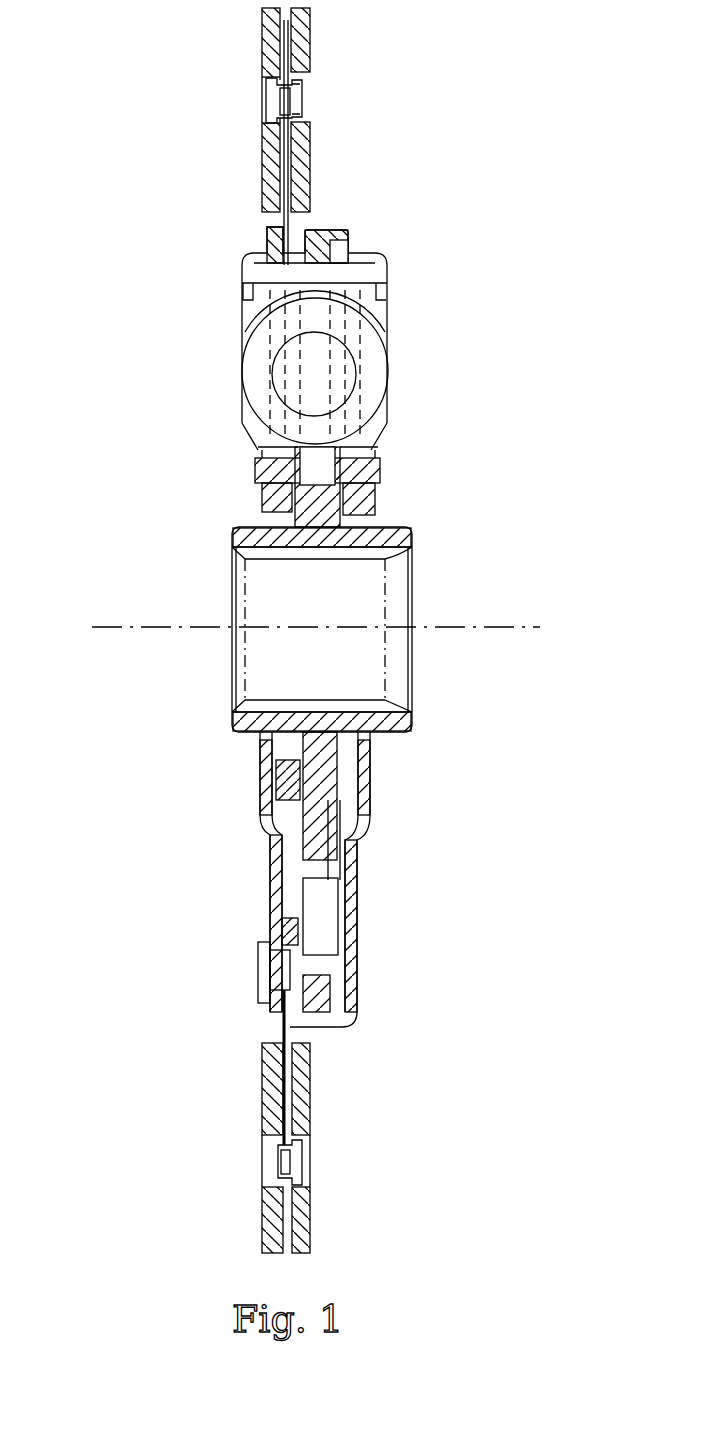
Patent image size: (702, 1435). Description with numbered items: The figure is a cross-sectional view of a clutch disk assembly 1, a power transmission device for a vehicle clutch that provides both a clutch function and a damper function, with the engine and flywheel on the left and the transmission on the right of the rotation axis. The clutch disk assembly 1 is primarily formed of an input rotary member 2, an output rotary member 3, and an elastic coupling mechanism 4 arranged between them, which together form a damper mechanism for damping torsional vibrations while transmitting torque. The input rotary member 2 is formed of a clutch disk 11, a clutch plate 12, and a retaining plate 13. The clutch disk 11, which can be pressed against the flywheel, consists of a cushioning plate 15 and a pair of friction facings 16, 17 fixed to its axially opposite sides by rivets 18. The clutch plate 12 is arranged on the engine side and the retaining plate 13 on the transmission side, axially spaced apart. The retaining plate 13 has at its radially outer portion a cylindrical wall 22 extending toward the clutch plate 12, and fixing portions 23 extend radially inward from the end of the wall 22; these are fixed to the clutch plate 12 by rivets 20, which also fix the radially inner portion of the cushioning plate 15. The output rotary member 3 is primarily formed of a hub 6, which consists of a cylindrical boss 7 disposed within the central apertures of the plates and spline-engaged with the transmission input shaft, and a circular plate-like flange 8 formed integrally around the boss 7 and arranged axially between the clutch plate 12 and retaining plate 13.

The clutch disk assembly 1 is at (314, 630).
The input rotary member 2 is at (301, 596).
The output rotary member 3 is at (314, 850).
The elastic coupling mechanism 4 is at (355, 305).
The hub 6 is at (409, 513).
The boss 7 is at (265, 525).
The flange 8 is at (311, 879).
The clutch disk 11 is at (292, 596).
The clutch plate 12 is at (272, 852).
The retaining plate 13 is at (350, 870).
The cushioning plate 15 is at (280, 225).
The friction facing 16 is at (268, 155).
The friction facing 17 is at (300, 143).
The rivet 18 is at (293, 100).
The rivet 20 is at (280, 965).
The cylindrical wall 22 is at (332, 235).
The fixing portion 23 is at (277, 940).